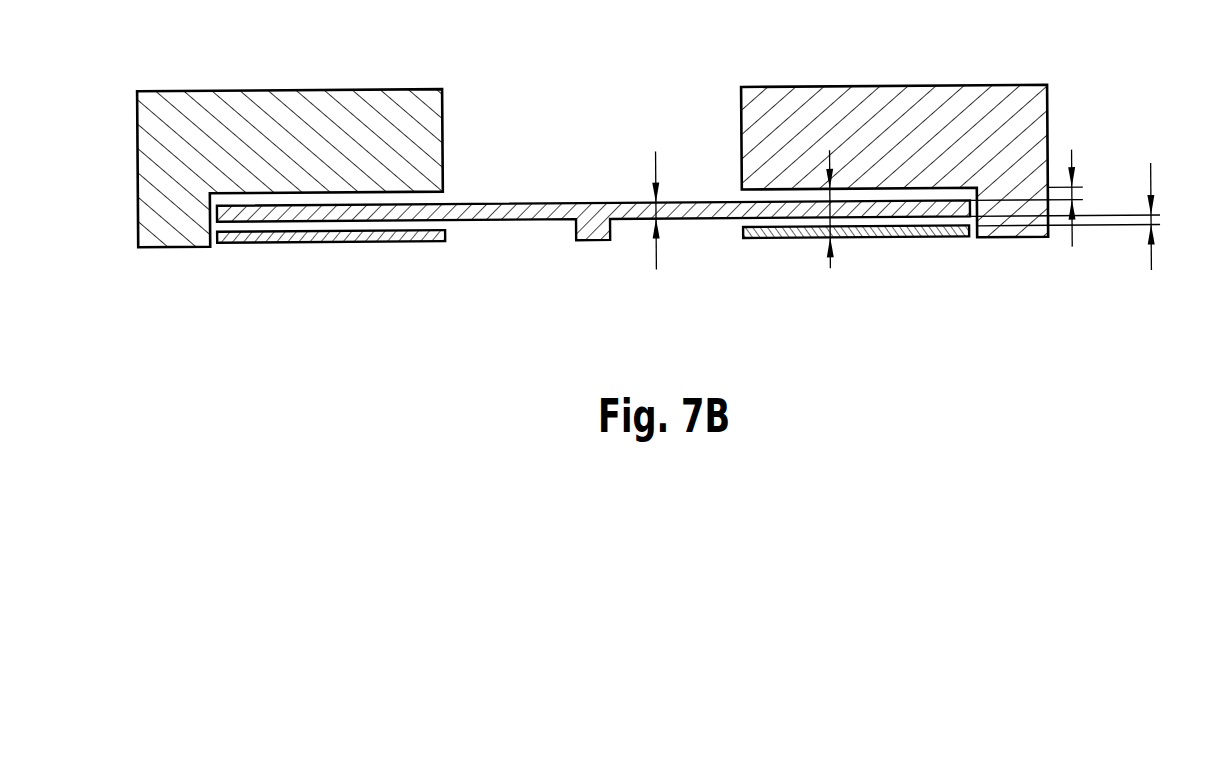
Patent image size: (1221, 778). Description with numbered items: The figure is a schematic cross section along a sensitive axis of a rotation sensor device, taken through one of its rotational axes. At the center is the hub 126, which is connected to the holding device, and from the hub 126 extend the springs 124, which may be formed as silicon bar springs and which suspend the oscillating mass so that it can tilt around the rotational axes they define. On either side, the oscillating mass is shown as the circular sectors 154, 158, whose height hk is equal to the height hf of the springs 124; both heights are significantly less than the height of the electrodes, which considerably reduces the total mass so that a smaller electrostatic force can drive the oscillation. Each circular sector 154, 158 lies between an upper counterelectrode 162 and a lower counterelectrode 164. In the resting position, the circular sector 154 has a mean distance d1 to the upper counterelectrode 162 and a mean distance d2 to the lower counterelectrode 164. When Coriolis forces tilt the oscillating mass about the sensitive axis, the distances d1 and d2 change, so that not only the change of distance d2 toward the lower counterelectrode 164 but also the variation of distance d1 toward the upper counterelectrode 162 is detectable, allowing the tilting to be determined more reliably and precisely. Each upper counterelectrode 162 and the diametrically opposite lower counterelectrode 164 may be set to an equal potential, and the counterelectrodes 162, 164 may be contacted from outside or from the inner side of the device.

The upper counterelectrode 162 is at (292, 138).
The springs 124 is at (648, 208).
The hub 126 is at (592, 228).
The lower counterelectrode 164 is at (398, 233).
The circular sector 158 is at (280, 210).
The circular sector 154 is at (937, 207).
The height of springs hf is at (652, 208).
The height of circular sectors hk is at (837, 209).
The mean distance to upper counterelectrode d1 is at (1073, 196).
The mean distance to lower counterelectrode d2 is at (1155, 225).